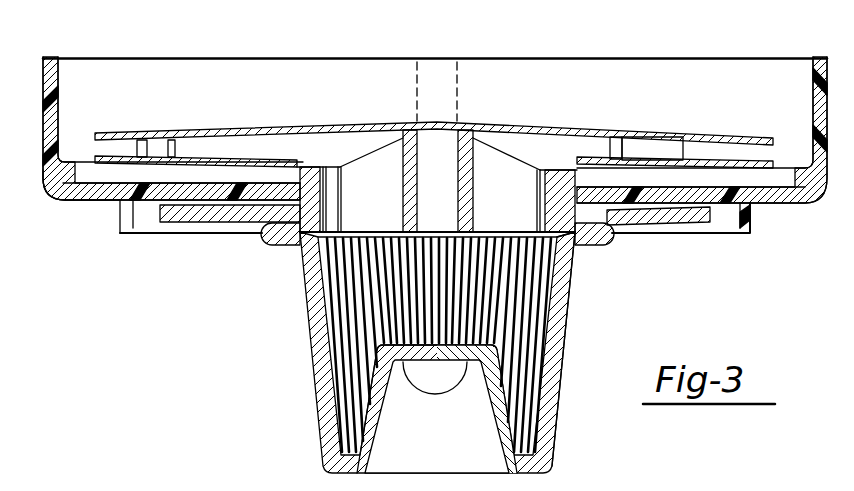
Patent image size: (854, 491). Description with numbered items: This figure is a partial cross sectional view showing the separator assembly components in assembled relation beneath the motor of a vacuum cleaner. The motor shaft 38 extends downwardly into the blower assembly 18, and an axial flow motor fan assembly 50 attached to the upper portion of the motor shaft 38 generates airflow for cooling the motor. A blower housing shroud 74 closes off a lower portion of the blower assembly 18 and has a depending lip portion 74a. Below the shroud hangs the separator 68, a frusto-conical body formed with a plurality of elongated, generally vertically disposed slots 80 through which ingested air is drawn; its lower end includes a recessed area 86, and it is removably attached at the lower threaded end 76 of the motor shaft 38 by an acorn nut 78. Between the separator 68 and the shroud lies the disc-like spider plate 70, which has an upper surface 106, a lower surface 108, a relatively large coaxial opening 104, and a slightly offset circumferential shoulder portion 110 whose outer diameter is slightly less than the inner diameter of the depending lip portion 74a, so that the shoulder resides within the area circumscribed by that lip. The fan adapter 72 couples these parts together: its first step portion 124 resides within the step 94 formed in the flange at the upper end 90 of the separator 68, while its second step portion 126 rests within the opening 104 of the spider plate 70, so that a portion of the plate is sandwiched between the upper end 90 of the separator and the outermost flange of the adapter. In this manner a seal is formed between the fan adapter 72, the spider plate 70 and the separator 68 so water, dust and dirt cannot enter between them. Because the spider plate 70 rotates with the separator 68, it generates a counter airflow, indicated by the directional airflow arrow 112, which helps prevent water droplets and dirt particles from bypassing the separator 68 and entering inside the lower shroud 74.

The blower assembly 18 is at (40, 70).
The axial flow motor fan assembly 50 is at (200, 132).
The motor shaft 38 is at (457, 88).
The fan adapter member 72 is at (300, 166).
The upper surface 106 is at (666, 198).
The second step portion 126 is at (590, 209).
The blower housing shroud 74 is at (63, 192).
The depending lip portion 74a is at (118, 236).
The spider plate 70 is at (183, 229).
The lower surface 108 is at (270, 234).
The opening 104 is at (300, 248).
The upper end 90 is at (593, 238).
The circumferential shoulder portion 110 is at (697, 215).
The directional airflow arrow 112 is at (727, 213).
The separator 68 is at (303, 380).
The recessed area 86 is at (370, 446).
The acorn nut 78 is at (455, 382).
The threaded end 76 is at (398, 362).
The slots 80 is at (440, 320).
The first step portion 124 is at (560, 263).
The step 94 is at (563, 318).